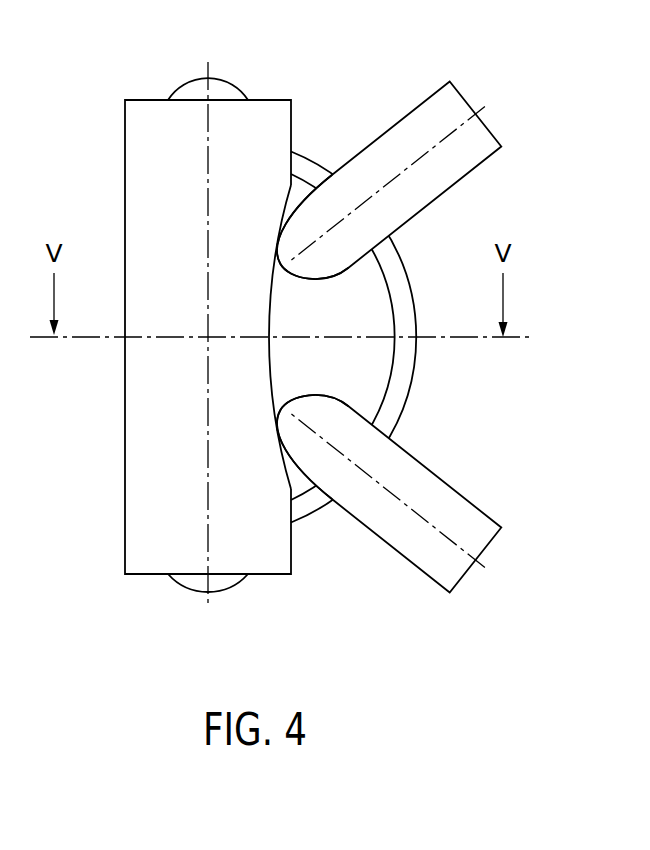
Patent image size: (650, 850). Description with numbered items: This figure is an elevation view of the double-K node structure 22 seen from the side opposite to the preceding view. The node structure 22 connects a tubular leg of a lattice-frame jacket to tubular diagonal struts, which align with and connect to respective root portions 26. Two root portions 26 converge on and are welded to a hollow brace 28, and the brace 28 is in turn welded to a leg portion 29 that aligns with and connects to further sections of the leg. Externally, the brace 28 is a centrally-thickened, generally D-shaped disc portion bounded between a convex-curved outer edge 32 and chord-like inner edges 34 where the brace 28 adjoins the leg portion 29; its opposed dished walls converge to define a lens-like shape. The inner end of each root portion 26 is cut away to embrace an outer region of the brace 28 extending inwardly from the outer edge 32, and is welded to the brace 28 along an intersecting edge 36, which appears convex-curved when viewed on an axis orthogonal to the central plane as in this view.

The double-K node structure 22 is at (343, 81).
The root portions 26 is at (225, 78).
The hollow brace 28 is at (387, 378).
The leg portion 29 is at (137, 565).
The convex-curved outer edge 32 is at (411, 270).
The chord-like inner edges 34 is at (272, 306).
The intersecting edge 36 is at (348, 264).